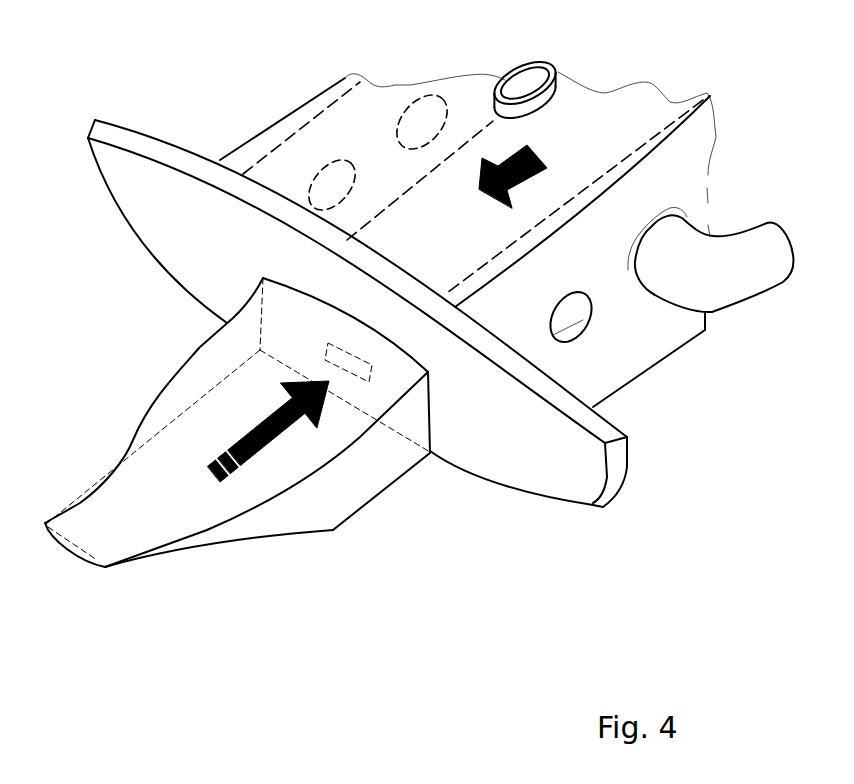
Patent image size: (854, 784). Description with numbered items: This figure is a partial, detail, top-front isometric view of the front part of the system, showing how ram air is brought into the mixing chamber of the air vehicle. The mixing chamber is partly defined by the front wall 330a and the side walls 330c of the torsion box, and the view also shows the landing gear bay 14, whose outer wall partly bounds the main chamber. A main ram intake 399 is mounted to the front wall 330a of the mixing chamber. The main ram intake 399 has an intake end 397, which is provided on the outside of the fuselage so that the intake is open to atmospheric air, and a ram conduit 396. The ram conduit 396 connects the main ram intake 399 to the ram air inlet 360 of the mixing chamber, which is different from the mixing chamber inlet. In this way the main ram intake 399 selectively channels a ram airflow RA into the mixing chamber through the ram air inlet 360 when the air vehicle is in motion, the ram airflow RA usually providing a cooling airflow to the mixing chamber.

The landing gear bay 14 is at (660, 333).
The front wall 330a is at (293, 272).
The side walls 330c is at (245, 143).
The ram air inlet 360 is at (360, 367).
The ram conduit 396 is at (412, 420).
The intake end 397 is at (150, 553).
The main ram intake 399 is at (315, 510).
The ram airflow RA is at (257, 467).